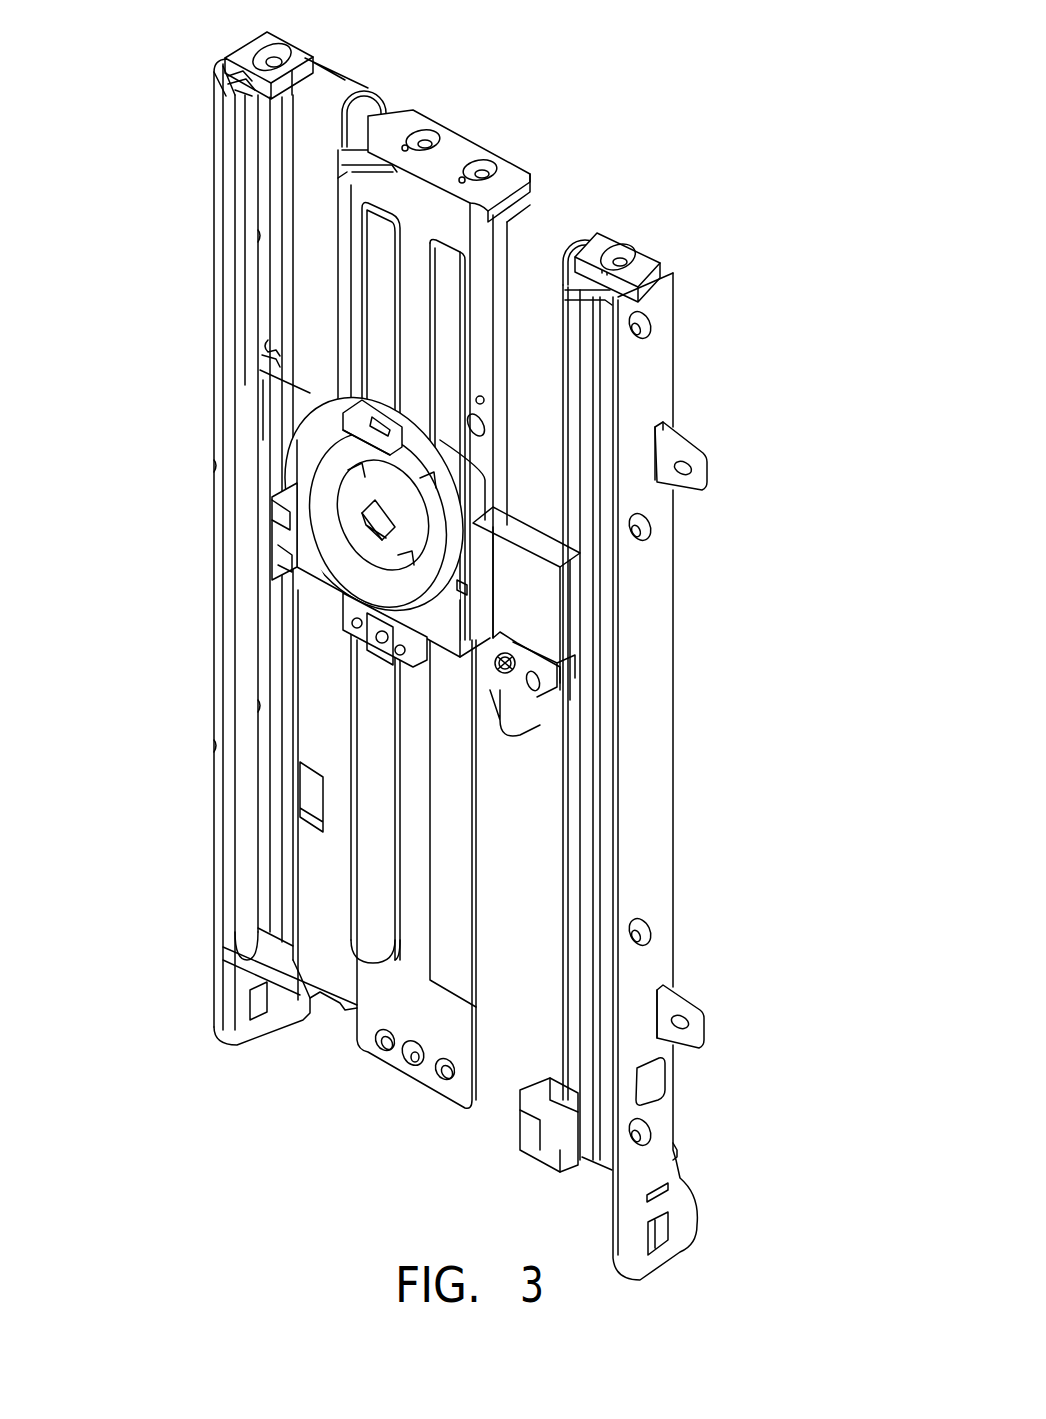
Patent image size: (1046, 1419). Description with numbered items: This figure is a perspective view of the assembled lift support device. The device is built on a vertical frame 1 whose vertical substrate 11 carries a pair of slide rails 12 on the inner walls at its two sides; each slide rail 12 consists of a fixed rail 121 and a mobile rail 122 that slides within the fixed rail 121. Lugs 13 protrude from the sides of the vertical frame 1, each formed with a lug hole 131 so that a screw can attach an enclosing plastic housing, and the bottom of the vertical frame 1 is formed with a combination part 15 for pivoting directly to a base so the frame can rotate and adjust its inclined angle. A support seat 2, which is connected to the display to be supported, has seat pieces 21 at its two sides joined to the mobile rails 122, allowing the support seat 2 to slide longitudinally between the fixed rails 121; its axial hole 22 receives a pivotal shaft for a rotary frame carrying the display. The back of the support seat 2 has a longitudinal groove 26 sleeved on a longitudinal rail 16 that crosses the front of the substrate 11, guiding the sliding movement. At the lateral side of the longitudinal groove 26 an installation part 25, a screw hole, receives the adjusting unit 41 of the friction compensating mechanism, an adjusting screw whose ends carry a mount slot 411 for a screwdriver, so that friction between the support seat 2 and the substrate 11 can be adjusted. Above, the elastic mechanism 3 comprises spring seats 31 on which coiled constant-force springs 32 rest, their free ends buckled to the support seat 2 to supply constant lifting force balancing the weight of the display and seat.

The vertical frame 1 is at (663, 583).
The support seat 2 is at (547, 600).
The elastic mechanism 3 is at (553, 172).
The vertical substrate 11 is at (540, 818).
The slide rail 12 is at (247, 220).
The lug 13 is at (683, 440).
The combination part 15 is at (243, 1030).
The longitudinal rail 16 is at (453, 883).
The seat piece 21 is at (263, 375).
The axial hole 22 is at (318, 520).
The installation part 25 is at (517, 668).
The longitudinal groove 26 is at (560, 540).
The spring seat 31 is at (368, 90).
The constant-force spring 32 is at (557, 207).
The adjusting unit 41 is at (517, 647).
The fixed rail 121 is at (267, 273).
The mobile rail 122 is at (273, 350).
The lug hole 131 is at (690, 468).
The mount slot 411 is at (510, 683).